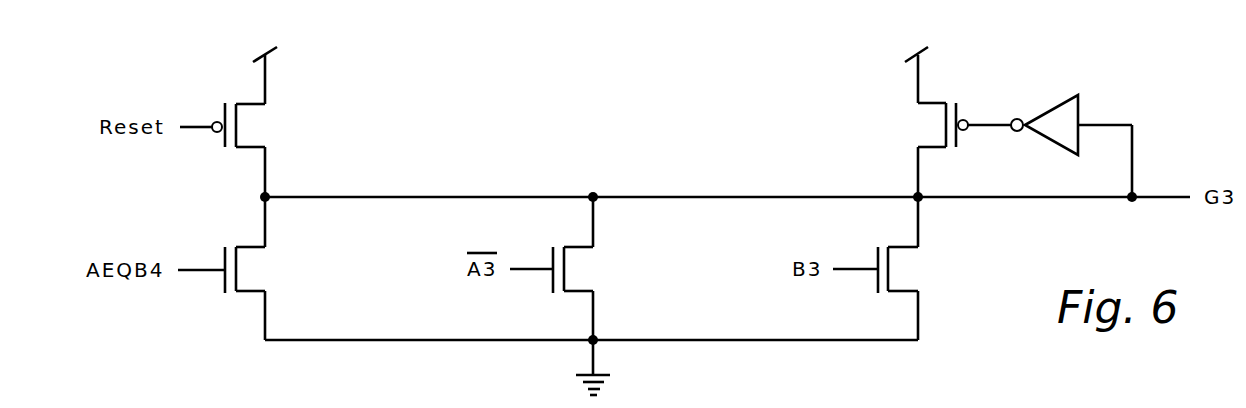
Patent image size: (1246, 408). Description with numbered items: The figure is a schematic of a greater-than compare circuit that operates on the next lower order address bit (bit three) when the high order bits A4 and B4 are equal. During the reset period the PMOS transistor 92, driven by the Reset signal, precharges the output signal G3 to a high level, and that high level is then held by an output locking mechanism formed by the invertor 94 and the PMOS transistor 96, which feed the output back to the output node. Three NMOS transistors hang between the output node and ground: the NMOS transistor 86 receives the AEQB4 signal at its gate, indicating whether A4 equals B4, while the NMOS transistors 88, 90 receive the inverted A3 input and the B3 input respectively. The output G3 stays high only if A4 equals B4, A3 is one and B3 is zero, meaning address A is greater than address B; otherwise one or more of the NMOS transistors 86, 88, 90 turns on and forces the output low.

The NMOS transistor 86 is at (243, 293).
The NMOS transistor 88 is at (568, 292).
The NMOS transistor 90 is at (893, 292).
The PMOS transistor 92 is at (244, 103).
The invertor 94 is at (1030, 112).
The PMOS transistor 96 is at (938, 103).